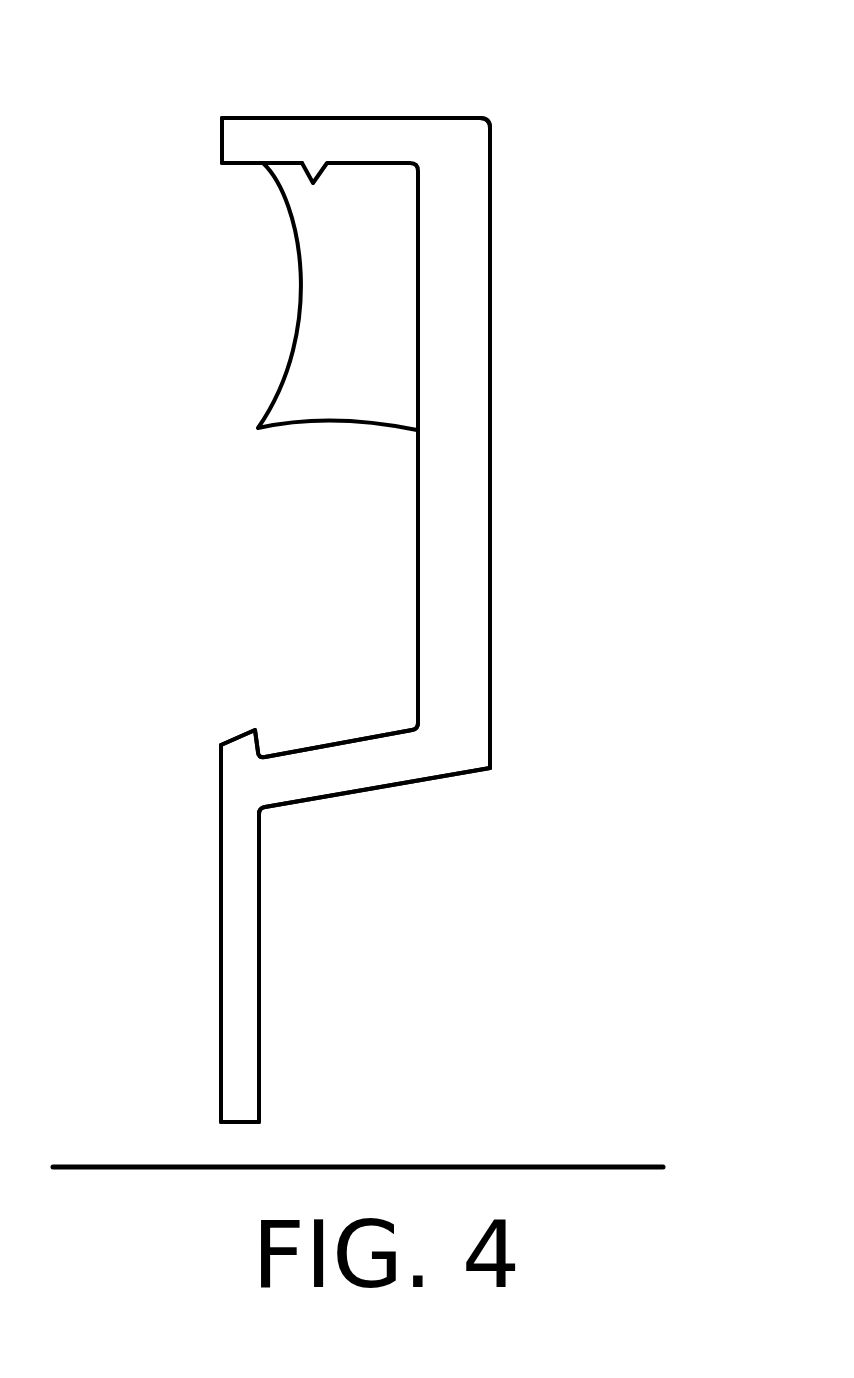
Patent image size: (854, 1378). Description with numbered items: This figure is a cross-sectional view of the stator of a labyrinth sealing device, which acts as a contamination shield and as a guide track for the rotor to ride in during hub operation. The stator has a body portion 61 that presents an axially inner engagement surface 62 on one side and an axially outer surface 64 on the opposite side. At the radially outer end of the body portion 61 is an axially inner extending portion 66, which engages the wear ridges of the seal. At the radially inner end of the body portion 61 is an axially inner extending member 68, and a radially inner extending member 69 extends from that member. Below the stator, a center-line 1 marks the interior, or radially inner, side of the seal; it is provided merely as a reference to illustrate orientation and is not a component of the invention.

The center-line 1 is at (600, 1172).
The body portion 61 is at (462, 288).
The axially inner engagement surface 62 is at (302, 311).
The axially outer surface 64 is at (489, 410).
The axially inner extending portion 66 is at (377, 143).
The axially inner extending member 68 is at (345, 769).
The radially inner extending member 69 is at (240, 980).